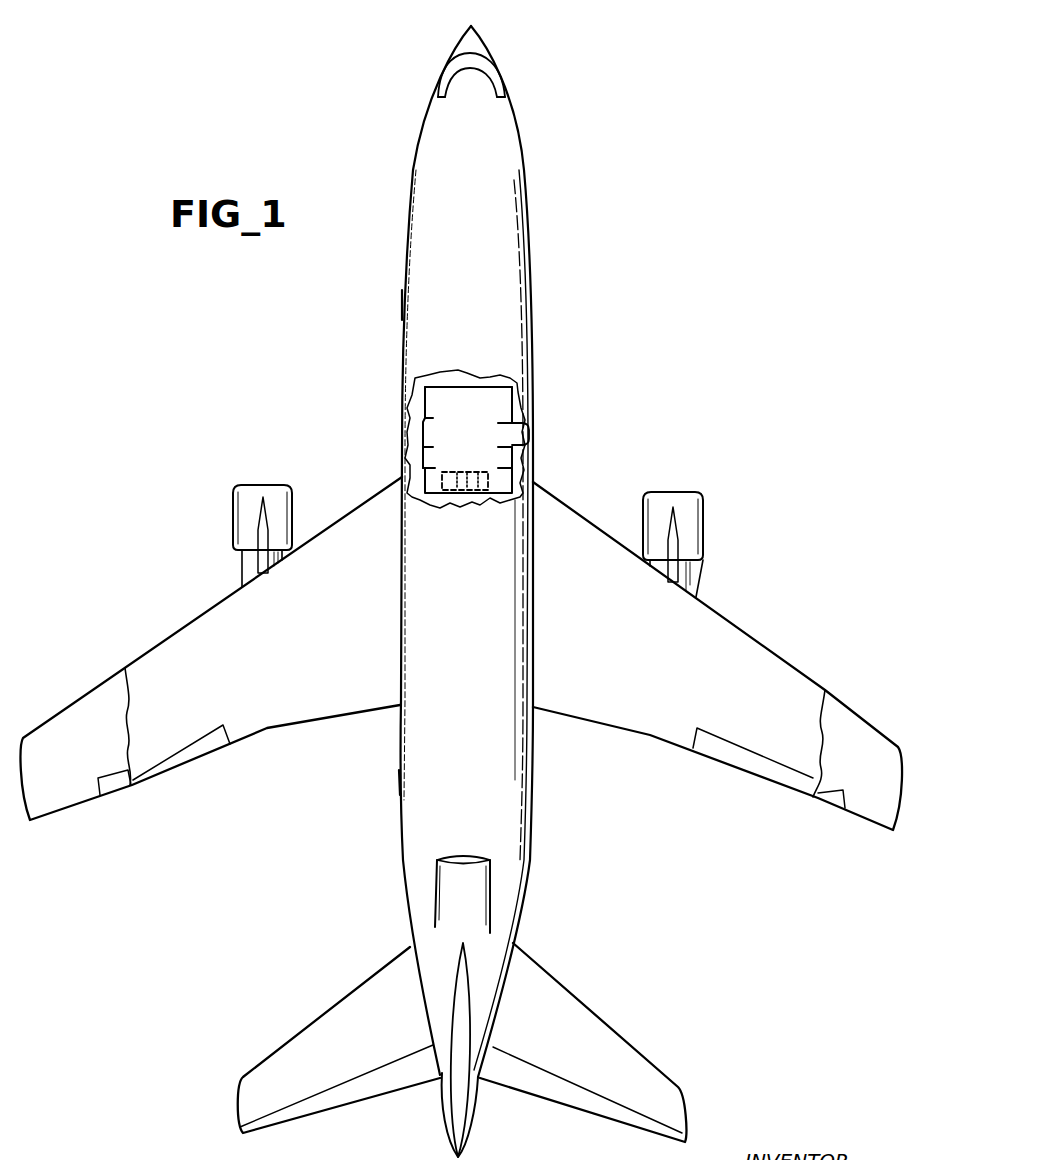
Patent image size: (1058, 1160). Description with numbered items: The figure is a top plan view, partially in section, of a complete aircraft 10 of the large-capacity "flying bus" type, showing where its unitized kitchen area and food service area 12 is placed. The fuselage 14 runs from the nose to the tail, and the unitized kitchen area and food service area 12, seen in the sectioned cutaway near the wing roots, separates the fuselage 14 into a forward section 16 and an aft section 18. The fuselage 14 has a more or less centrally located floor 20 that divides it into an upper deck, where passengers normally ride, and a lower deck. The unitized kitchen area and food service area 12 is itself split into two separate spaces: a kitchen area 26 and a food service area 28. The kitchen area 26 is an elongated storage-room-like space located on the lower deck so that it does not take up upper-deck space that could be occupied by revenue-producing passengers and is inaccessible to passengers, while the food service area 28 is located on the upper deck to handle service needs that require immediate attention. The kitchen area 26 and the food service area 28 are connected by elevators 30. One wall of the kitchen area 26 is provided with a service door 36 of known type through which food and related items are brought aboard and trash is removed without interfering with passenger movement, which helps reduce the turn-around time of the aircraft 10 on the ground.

The aircraft 10 is at (461, 591).
The unitized kitchen area and food service area 12 is at (418, 453).
The fuselage 14 is at (534, 642).
The forward section 16 is at (403, 304).
The aft section 18 is at (400, 780).
The floor 20 is at (481, 447).
The kitchen area 26 is at (492, 421).
The food service area 28 is at (441, 490).
The elevators 30 is at (462, 490).
The service door 36 is at (530, 439).